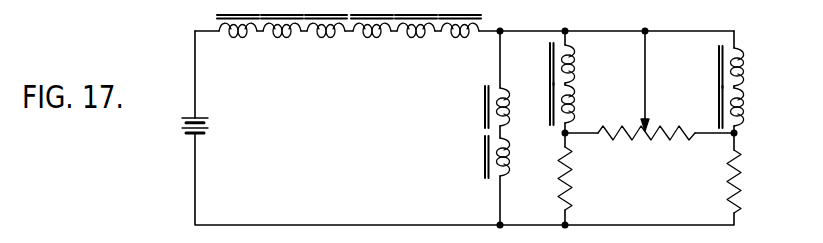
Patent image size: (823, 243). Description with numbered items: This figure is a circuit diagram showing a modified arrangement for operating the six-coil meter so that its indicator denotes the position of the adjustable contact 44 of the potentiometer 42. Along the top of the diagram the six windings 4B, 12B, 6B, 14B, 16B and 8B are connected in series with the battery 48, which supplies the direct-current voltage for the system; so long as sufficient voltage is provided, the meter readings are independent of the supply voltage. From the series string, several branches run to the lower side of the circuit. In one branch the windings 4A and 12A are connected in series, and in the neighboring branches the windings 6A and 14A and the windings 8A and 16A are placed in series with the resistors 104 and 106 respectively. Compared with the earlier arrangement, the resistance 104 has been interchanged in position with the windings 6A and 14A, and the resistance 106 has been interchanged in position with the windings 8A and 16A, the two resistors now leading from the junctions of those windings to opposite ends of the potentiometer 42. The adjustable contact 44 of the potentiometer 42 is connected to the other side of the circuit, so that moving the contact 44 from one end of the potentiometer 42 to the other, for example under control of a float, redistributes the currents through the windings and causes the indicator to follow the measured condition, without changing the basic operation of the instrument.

The winding 4B is at (234, 38).
The winding 12B is at (279, 39).
The winding 6B is at (324, 39).
The winding 14B is at (371, 39).
The winding 16B is at (418, 39).
The winding 8B is at (460, 39).
The winding 4A is at (513, 106).
The winding 12A is at (513, 157).
The winding 6A is at (575, 64).
The winding 14A is at (578, 100).
The winding 8A is at (748, 62).
The winding 16A is at (748, 101).
The resistor 104 is at (573, 178).
The resistor 106 is at (742, 178).
The potentiometer 42 is at (637, 136).
The adjustable contact 44 is at (648, 123).
The battery 48 is at (210, 127).